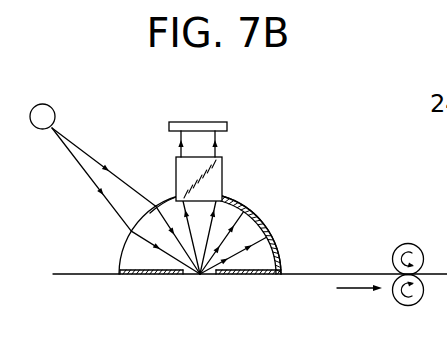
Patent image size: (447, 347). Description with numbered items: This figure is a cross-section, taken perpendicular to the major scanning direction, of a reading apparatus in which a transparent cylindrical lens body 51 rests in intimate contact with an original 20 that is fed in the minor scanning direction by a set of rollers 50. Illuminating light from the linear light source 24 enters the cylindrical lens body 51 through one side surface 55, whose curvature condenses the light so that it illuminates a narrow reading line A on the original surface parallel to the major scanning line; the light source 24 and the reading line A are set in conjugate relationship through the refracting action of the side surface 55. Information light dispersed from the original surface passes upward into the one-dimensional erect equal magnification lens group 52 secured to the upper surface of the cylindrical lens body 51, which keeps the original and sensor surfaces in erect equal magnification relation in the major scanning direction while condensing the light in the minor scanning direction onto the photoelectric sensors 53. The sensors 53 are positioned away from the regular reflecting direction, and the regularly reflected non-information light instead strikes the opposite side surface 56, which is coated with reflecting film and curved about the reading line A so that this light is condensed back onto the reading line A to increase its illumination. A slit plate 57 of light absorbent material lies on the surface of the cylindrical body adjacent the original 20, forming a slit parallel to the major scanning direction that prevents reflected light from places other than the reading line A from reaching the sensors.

The original 20 is at (78, 277).
The light source 24 is at (45, 103).
The rollers 50 is at (408, 244).
The cylindrical lens body 51 is at (127, 256).
The erect equal magnification lens group 52 is at (222, 185).
The photoelectric sensors 53 is at (228, 128).
The side surface 55 is at (163, 202).
The side surface coated with reflecting film 56 is at (268, 224).
The slit plate 57 is at (145, 277).
The reading line A is at (201, 278).